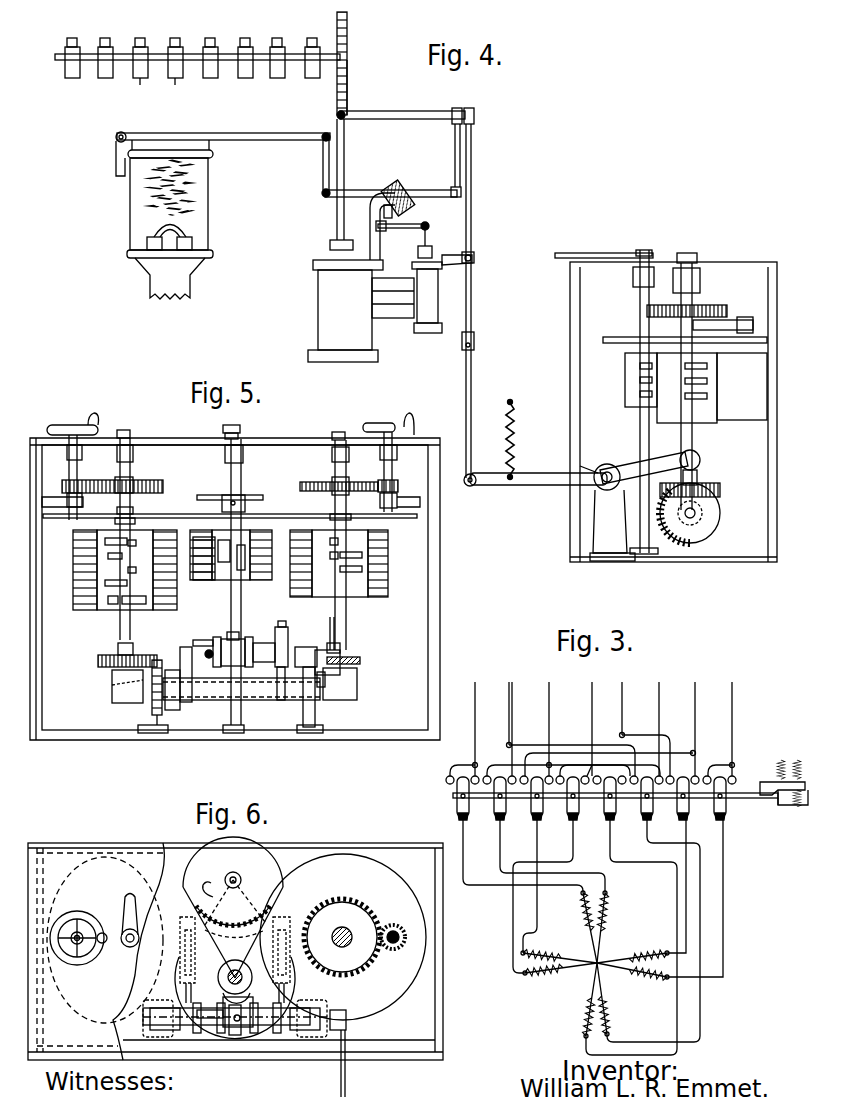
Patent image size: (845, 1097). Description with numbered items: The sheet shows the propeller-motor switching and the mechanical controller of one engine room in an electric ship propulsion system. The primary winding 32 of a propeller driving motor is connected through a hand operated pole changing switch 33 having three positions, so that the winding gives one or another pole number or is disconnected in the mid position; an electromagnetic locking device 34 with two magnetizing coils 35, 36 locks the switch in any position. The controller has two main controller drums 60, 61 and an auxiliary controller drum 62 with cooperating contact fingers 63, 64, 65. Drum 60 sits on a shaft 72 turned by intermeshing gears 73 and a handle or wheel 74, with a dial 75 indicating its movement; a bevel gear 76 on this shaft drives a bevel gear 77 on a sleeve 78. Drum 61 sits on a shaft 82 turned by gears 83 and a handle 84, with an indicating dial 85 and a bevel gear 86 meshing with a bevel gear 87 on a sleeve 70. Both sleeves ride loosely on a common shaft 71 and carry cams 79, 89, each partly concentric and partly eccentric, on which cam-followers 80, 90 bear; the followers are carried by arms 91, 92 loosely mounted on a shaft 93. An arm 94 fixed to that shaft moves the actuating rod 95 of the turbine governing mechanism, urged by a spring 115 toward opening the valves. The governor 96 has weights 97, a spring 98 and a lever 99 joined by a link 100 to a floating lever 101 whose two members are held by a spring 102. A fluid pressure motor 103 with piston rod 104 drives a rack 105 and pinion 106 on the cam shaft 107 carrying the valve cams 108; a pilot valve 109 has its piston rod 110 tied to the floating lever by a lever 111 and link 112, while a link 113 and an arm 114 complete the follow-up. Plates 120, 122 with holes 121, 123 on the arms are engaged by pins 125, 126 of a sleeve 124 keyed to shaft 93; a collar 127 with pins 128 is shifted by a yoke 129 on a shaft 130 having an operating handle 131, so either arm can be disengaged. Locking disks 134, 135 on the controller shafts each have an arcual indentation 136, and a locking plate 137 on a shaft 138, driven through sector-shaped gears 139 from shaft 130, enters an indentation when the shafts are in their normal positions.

In FIG. 3, the primary winding 32 is at (585, 1005).
In FIG. 3, the pole changing switch 33 is at (458, 796).
In FIG. 3, the electromagnetic locking device 34 is at (784, 805).
In FIG. 3, the magnetizing coil 35 is at (778, 760).
In FIG. 3, the magnetizing coil 36 is at (797, 760).
In FIG. 5, the main controller drum 60 is at (102, 607).
In FIG. 4, the main controller drum 61 is at (712, 388).
In FIG. 5, the main controller drum 61 is at (362, 590).
In FIG. 4, the auxiliary controller drum 62 is at (625, 380).
In FIG. 5, the auxiliary controller drum 62 is at (250, 578).
In FIG. 5, the contact fingers 63 is at (73, 568).
In FIG. 5, the contact fingers 64 is at (388, 562).
In FIG. 5, the contact fingers 65 is at (203, 580).
In FIG. 5, the sleeve 70 is at (256, 700).
In FIG. 5, the common shaft 71 is at (112, 690).
In FIG. 5, the shaft 72 is at (133, 502).
In FIG. 5, the intermeshing gears 73 is at (88, 480).
In FIG. 5, the handle or wheel 74 is at (62, 425).
In FIG. 6, the handle or wheel 74 is at (77, 911).
In FIG. 5, the dial 75 is at (132, 430).
In FIG. 6, the dial 75 is at (132, 896).
In FIG. 5, the bevel gear 76 is at (98, 661).
In FIG. 5, the bevel gear 77 is at (152, 709).
In FIG. 5, the sleeve 78 is at (208, 700).
In FIG. 5, the cam 79 is at (182, 650).
In FIG. 6, the cam 79 is at (180, 920).
In FIG. 6, the cam-follower 80 is at (185, 937).
In FIG. 4, the shaft 82 is at (694, 440).
In FIG. 5, the shaft 82 is at (333, 502).
In FIG. 6, the shaft 82 is at (340, 948).
In FIG. 4, the intermeshing gears 83 is at (708, 304).
In FIG. 5, the intermeshing gears 83 is at (357, 482).
In FIG. 6, the intermeshing gears 83 is at (390, 925).
In FIG. 5, the handle 84 is at (382, 423).
In FIG. 4, the indicating dial 85 is at (705, 253).
In FIG. 5, the indicating dial 85 is at (333, 432).
In FIG. 4, the bevel gear 86 is at (722, 490).
In FIG. 5, the bevel gear 86 is at (362, 661).
In FIG. 4, the bevel gear 87 is at (712, 536).
In FIG. 5, the bevel gear 87 is at (330, 703).
In FIG. 4, the cam 89 is at (700, 478).
In FIG. 5, the cam 89 is at (303, 700).
In FIG. 6, the cam 89 is at (285, 917).
In FIG. 4, the cam-follower 90 is at (700, 462).
In FIG. 6, the cam-follower 90 is at (286, 930).
In FIG. 6, the arm 91 is at (184, 985).
In FIG. 4, the arm 92 is at (660, 461).
In FIG. 6, the arm 92 is at (286, 985).
In FIG. 4, the shaft 93 is at (580, 466).
In FIG. 5, the shaft 93 is at (207, 650).
In FIG. 6, the shaft 93 is at (283, 1033).
In FIG. 4, the arm 94 is at (545, 486).
In FIG. 6, the arm 94 is at (346, 1086).
In FIG. 4, the actuating rod 95 is at (474, 376).
In FIG. 5, the actuating rod 95 is at (330, 624).
In FIG. 4, the governor 96 is at (208, 232).
In FIG. 4, the weights 97 is at (145, 243).
In FIG. 4, the spring 98 is at (192, 192).
In FIG. 4, the lever 99 is at (244, 133).
In FIG. 4, the link 100 is at (321, 168).
In FIG. 4, the floating lever 101 is at (375, 190).
In FIG. 4, the spring 102 is at (412, 186).
In FIG. 4, the fluid pressure motor 103 is at (320, 308).
In FIG. 4, the piston rod 104 is at (346, 160).
In FIG. 4, the rack 105 is at (348, 86).
In FIG. 4, the pinion 106 is at (348, 56).
In FIG. 4, the cam shaft 107 is at (190, 54).
In FIG. 4, the cams 108 is at (175, 85).
In FIG. 4, the pilot valve 109 is at (440, 298).
In FIG. 4, the piston rod 110 is at (433, 242).
In FIG. 4, the lever 111 is at (410, 230).
In FIG. 4, the link 112 is at (394, 214).
In FIG. 4, the link 113 is at (453, 131).
In FIG. 4, the arm 114 is at (413, 111).
In FIG. 4, the spring 115 is at (518, 428).
In FIG. 6, the plate 120 is at (182, 1037).
In FIG. 6, the hole 121 is at (168, 994).
In FIG. 6, the plate 122 is at (280, 1037).
In FIG. 6, the hole 123 is at (305, 1005).
In FIG. 6, the sleeve 124 is at (210, 1006).
In FIG. 5, the pin 125 is at (218, 637).
In FIG. 6, the pin 125 is at (205, 1037).
In FIG. 5, the pin 126 is at (258, 637).
In FIG. 6, the pin 126 is at (265, 1037).
In FIG. 5, the collar 127 is at (233, 652).
In FIG. 6, the collar 127 is at (246, 1037).
In FIG. 5, the pins 128 is at (248, 636).
In FIG. 6, the pins 128 is at (238, 1037).
In FIG. 4, the yoke 129 is at (613, 462).
In FIG. 6, the yoke 129 is at (220, 1000).
In FIG. 4, the shaft 130 is at (638, 412).
In FIG. 5, the shaft 130 is at (243, 476).
In FIG. 6, the shaft 130 is at (235, 966).
In FIG. 4, the operating handle 131 is at (582, 253).
In FIG. 5, the operating handle 131 is at (241, 428).
In FIG. 5, the locking disk 134 is at (178, 514).
In FIG. 6, the locking disk 134 is at (172, 880).
In FIG. 4, the locking disk 135 is at (609, 337).
In FIG. 5, the locking disk 135 is at (277, 514).
In FIG. 6, the locking disk 135 is at (343, 937).
In FIG. 6, the arcual indentation 136 is at (282, 882).
In FIG. 5, the locking plate 137 is at (222, 506).
In FIG. 6, the locking plate 137 is at (252, 900).
In FIG. 4, the shaft 138 is at (745, 317).
In FIG. 6, the shaft 138 is at (233, 872).
In FIG. 4, the sector-shaped gears 139 is at (725, 320).
In FIG. 5, the sector-shaped gears 139 is at (213, 495).
In FIG. 6, the sector-shaped gears 139 is at (203, 895).